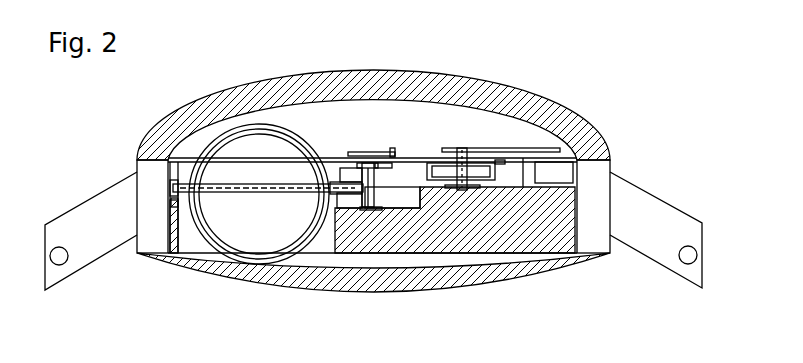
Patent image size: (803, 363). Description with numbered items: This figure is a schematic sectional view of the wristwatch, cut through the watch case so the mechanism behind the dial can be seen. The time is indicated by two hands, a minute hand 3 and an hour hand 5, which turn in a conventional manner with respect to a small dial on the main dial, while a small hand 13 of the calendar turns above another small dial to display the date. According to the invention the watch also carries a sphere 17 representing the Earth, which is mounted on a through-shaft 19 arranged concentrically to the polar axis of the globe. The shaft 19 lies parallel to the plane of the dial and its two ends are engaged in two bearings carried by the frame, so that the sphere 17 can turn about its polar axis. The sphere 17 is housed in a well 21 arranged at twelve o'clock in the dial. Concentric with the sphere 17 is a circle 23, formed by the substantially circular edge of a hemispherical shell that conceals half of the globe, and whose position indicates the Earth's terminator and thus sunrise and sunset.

The minute hand 3 is at (533, 150).
The hour hand 5 is at (483, 150).
The small hand 13 is at (382, 153).
The sphere 17 is at (257, 123).
The through-shaft 19 is at (337, 183).
The well 21 is at (187, 158).
The circle 23 is at (296, 255).